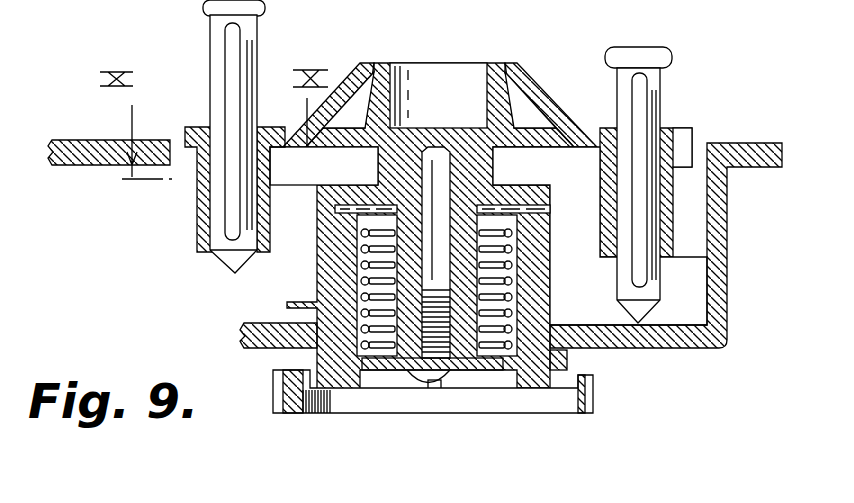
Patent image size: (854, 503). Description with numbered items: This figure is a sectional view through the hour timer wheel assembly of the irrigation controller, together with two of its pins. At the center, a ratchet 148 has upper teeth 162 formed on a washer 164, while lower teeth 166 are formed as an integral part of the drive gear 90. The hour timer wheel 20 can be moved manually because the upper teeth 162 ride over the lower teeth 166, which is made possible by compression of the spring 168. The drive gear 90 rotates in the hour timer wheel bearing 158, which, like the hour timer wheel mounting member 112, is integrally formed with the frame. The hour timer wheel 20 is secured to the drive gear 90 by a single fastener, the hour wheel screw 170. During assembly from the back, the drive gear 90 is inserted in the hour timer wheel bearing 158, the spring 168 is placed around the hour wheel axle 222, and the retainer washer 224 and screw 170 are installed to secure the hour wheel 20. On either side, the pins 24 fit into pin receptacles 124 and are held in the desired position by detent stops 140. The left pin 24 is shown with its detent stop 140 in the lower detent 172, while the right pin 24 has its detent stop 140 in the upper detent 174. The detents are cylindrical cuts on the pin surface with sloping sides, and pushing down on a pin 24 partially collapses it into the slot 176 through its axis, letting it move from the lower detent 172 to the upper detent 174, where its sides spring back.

The hour timer wheel 20 is at (370, 68).
The pins 24 is at (215, 27).
The drive gear 90 is at (585, 400).
The hour timer wheel mounting member 112 is at (718, 347).
The pin receptacles 124 is at (200, 233).
The detent stops 140 is at (617, 177).
The ratchet 148 is at (368, 195).
The hour timer wheel bearing 158 is at (320, 318).
The upper teeth 162 is at (537, 158).
The washer 164 is at (505, 180).
The lower teeth 166 is at (527, 208).
The spring 168 is at (489, 360).
The hour wheel screw 170 is at (446, 392).
The lower detent 172 is at (250, 168).
The upper detent 174 is at (256, 150).
The slot 176 is at (235, 95).
The hour wheel axle 222 is at (307, 408).
The retainer washer 224 is at (386, 367).